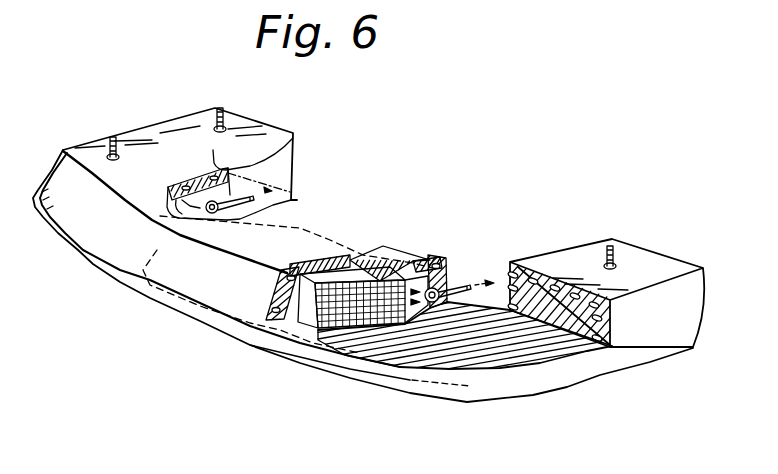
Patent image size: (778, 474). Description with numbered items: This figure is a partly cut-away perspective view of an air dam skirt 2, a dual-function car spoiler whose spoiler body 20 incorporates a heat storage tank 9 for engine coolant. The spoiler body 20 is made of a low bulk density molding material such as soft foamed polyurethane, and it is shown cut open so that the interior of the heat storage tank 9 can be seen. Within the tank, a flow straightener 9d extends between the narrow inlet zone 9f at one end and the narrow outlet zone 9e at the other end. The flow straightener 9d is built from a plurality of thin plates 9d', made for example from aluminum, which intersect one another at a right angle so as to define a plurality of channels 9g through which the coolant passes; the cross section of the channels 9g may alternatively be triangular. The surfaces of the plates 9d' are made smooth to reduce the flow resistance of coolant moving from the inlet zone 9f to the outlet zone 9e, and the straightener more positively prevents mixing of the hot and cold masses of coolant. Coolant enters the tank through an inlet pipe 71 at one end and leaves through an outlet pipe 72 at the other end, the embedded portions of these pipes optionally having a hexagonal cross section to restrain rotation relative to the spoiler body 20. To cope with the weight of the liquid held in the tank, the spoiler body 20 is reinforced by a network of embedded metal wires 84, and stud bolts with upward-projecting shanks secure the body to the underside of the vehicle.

The air dam skirt 2 is at (143, 314).
The spoiler body 20 is at (110, 280).
The heat storage tank 9 is at (273, 323).
The flow straightener 9d is at (465, 363).
The thin plates 9d' is at (357, 373).
The outlet zone 9e is at (433, 252).
The inlet zone 9f is at (180, 205).
The channels 9g is at (313, 320).
The inlet pipe 71 is at (259, 190).
The outlet pipe 72 is at (470, 282).
The metal wires 84 is at (318, 263).